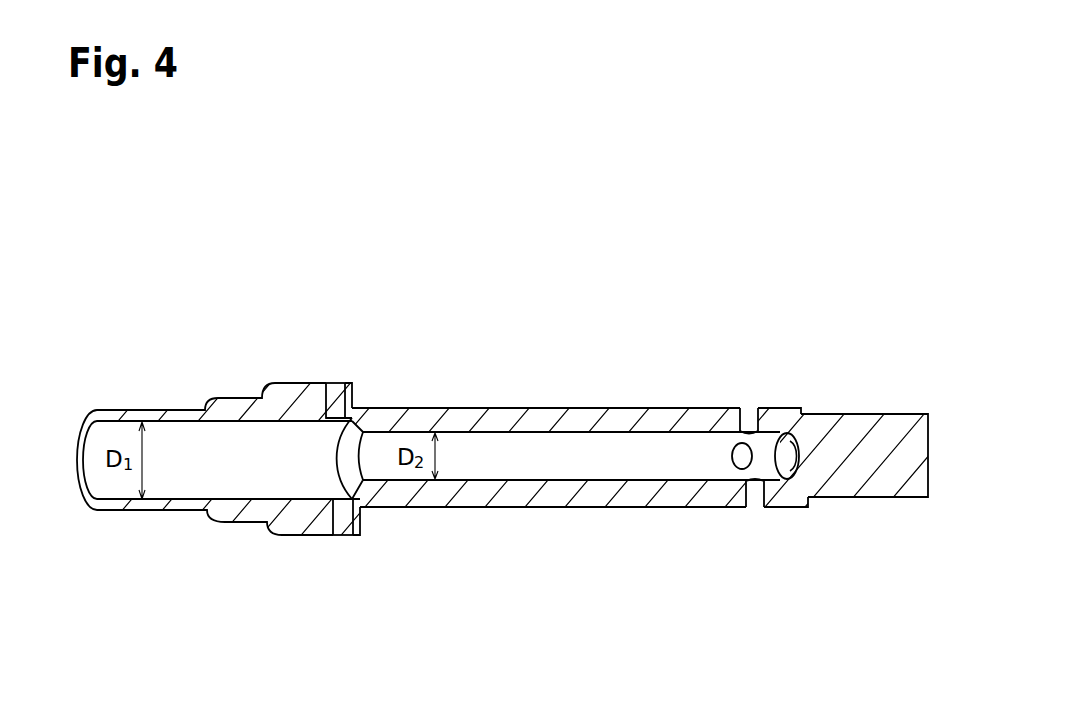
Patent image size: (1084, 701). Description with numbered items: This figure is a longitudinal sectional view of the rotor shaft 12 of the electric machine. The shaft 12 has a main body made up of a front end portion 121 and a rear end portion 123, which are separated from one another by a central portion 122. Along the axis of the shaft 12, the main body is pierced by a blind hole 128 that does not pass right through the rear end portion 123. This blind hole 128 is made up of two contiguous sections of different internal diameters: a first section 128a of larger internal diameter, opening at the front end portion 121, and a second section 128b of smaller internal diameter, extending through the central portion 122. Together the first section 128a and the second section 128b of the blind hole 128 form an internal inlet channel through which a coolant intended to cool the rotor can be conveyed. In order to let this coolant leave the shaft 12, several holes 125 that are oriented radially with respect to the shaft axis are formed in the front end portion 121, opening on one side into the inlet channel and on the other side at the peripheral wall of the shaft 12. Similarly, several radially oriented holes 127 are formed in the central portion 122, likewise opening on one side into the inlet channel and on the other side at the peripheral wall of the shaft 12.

The shaft 12 is at (882, 366).
The front end portion 121 is at (247, 523).
The central portion 122 is at (587, 510).
The rear end portion 123 is at (885, 463).
The holes 125 is at (335, 393).
The holes 127 is at (750, 412).
The blind hole 128 is at (284, 458).
The first section 128a is at (185, 394).
The second section 128b is at (573, 393).